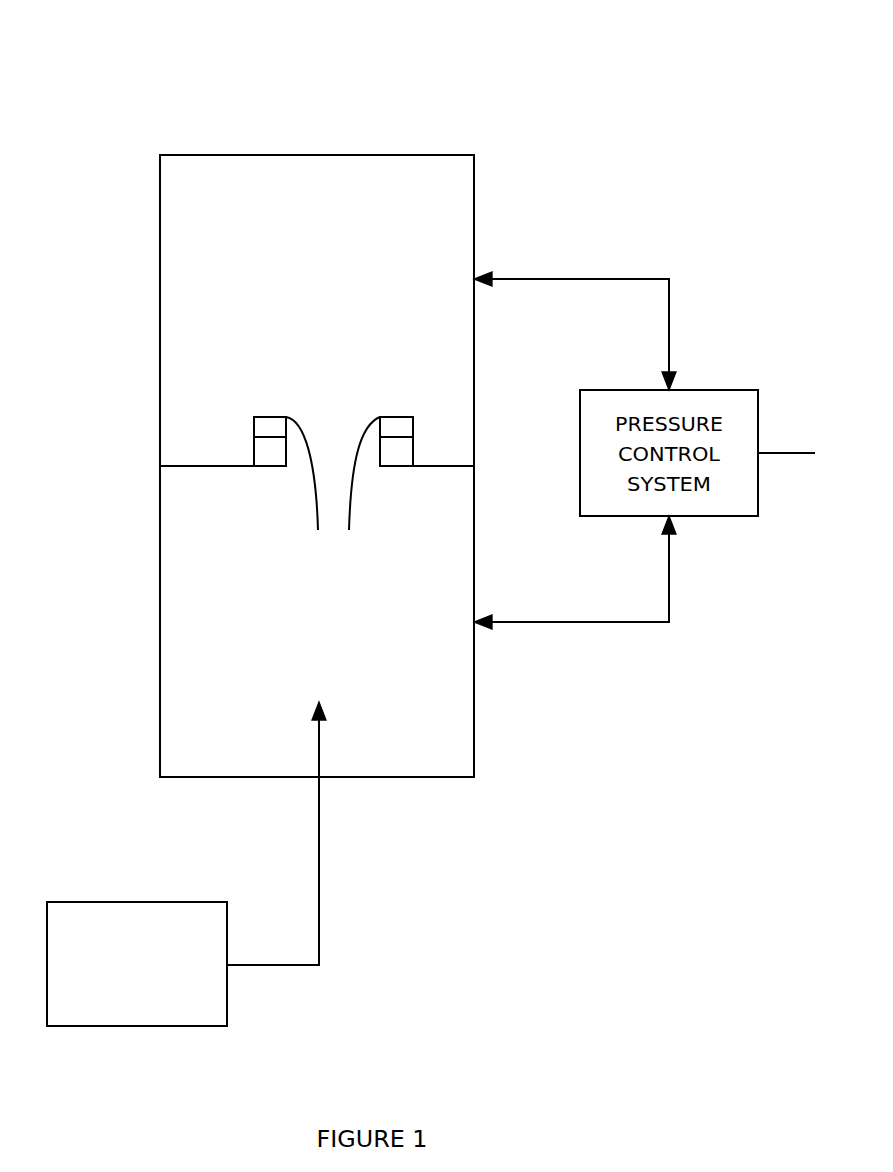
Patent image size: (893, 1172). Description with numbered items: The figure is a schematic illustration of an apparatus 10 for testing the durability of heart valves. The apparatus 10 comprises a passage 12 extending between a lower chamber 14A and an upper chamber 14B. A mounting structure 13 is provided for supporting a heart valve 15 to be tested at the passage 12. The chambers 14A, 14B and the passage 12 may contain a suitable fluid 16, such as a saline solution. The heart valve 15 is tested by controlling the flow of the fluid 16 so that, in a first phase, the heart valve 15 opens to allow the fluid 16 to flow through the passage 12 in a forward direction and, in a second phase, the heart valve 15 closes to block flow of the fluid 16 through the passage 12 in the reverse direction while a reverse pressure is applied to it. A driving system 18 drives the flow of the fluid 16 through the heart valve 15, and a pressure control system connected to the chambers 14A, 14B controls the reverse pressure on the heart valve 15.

The apparatus 10 is at (476, 123).
The passage 12 is at (300, 470).
The mounting structure 13 is at (254, 448).
The chamber 14A is at (193, 652).
The chamber 14B is at (223, 186).
The heart valve 15 is at (378, 420).
The fluid 16 is at (332, 449).
The driving system 18 is at (136, 902).